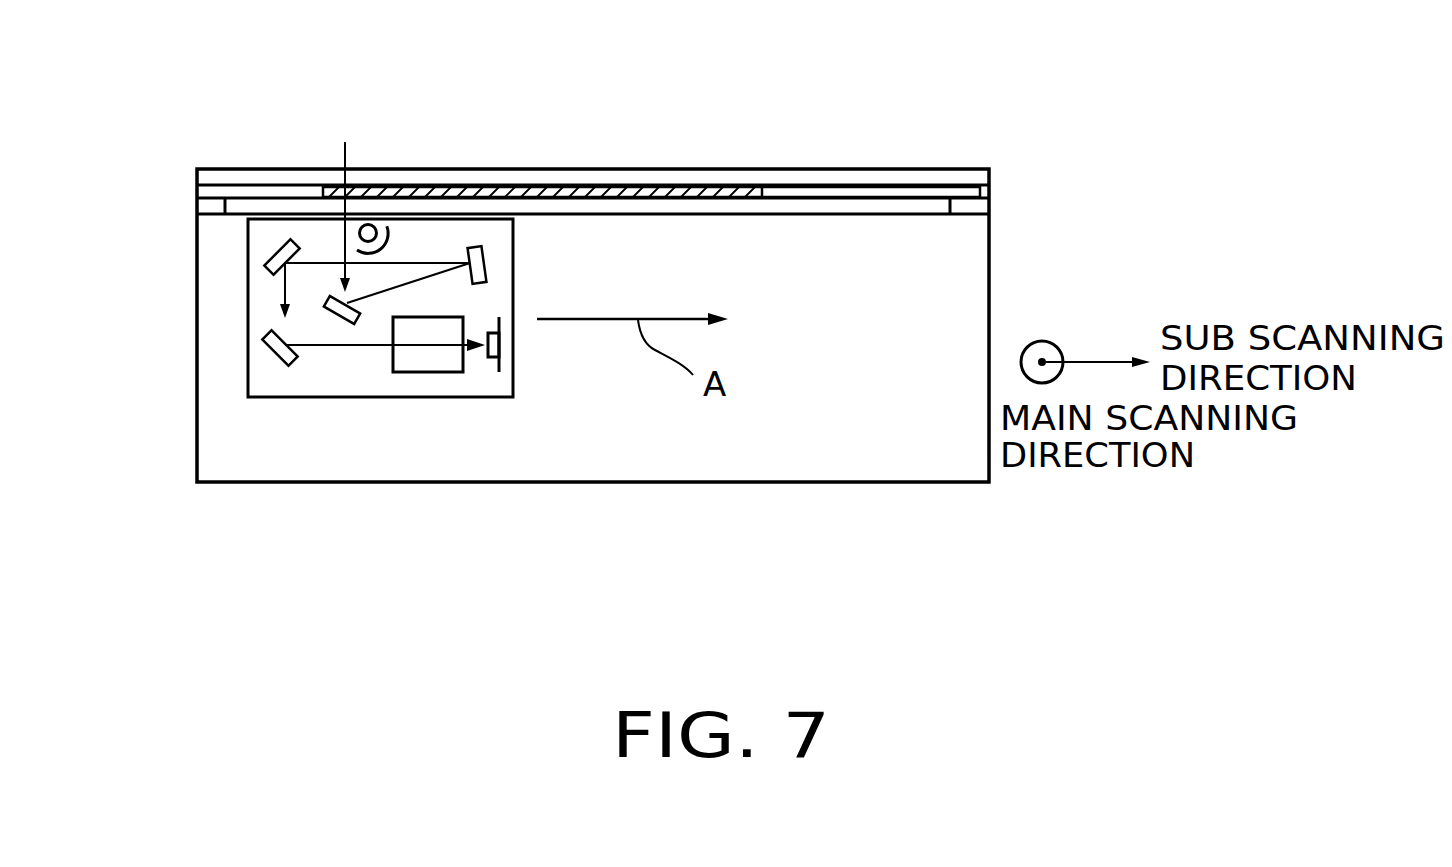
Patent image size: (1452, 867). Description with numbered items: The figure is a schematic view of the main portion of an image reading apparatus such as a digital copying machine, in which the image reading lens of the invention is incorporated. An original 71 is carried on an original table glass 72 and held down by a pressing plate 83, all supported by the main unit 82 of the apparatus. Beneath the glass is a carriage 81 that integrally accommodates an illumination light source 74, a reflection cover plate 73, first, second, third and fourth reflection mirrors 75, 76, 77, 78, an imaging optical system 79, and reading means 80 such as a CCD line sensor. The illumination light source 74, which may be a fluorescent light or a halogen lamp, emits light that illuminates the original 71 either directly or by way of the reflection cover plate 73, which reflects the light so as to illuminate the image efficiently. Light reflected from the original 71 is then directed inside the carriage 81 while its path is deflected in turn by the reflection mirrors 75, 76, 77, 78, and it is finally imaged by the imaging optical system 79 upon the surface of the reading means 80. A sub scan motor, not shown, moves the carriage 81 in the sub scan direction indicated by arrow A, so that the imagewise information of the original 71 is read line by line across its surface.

The original 71 is at (550, 185).
The original table glass 72 is at (855, 217).
The reflection cover plate 73 is at (378, 235).
The illumination light source 74 is at (347, 226).
The first reflection mirror 75 is at (340, 323).
The second reflection mirror 76 is at (485, 255).
The third reflection mirror 77 is at (267, 270).
The fourth reflection mirror 78 is at (272, 358).
The imaging optical system 79 is at (430, 372).
The reading means 80 is at (500, 357).
The carriage 81 is at (513, 232).
The main unit 82 is at (1007, 245).
The pressing plate 83 is at (855, 183).